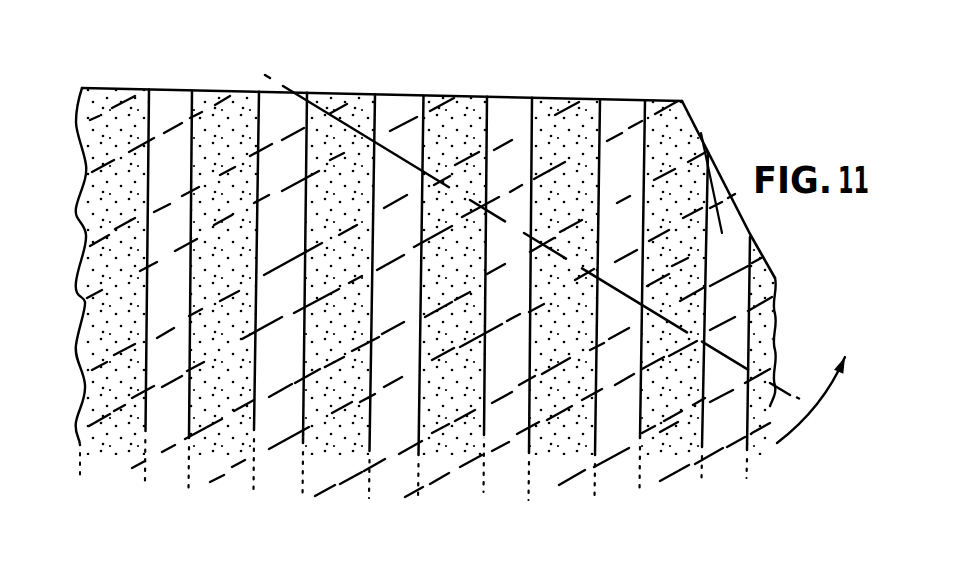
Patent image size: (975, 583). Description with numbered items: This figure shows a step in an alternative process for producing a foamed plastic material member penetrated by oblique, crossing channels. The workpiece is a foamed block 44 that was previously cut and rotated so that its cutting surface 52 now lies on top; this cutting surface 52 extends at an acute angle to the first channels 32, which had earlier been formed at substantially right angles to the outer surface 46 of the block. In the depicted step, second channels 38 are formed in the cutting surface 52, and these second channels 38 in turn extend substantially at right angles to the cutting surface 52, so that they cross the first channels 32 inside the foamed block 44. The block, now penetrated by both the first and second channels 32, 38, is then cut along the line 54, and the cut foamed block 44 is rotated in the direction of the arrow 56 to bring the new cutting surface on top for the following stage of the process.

The foamed block 44 is at (72, 80).
The first channels 32 is at (505, 265).
The second channels 38 is at (628, 160).
The outer surface 46 is at (722, 178).
The cutting surface 52 is at (468, 97).
The line 54 is at (287, 88).
The arrow 56 is at (803, 423).